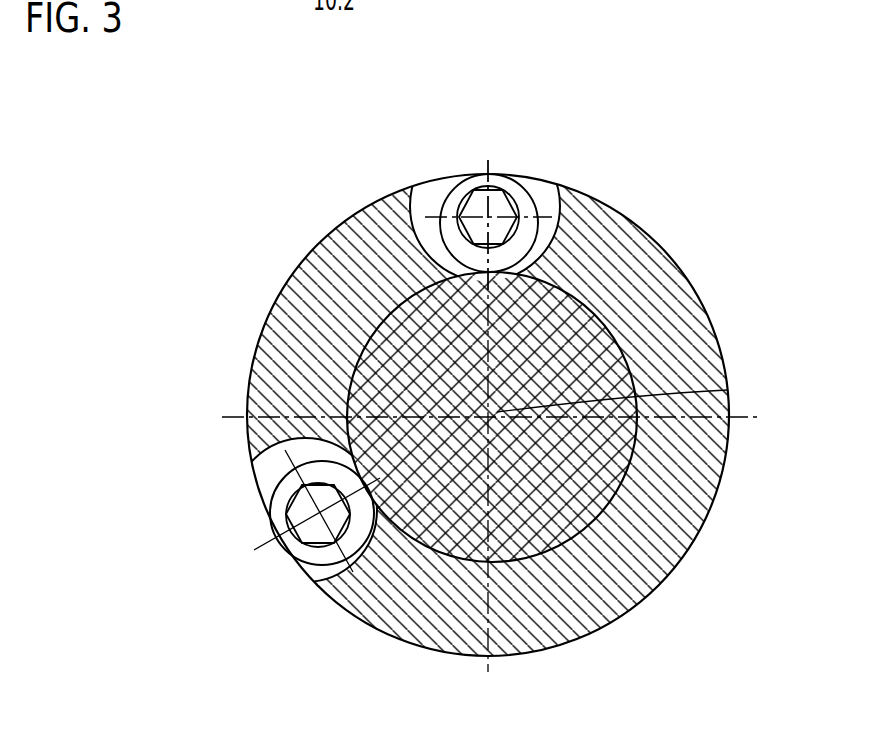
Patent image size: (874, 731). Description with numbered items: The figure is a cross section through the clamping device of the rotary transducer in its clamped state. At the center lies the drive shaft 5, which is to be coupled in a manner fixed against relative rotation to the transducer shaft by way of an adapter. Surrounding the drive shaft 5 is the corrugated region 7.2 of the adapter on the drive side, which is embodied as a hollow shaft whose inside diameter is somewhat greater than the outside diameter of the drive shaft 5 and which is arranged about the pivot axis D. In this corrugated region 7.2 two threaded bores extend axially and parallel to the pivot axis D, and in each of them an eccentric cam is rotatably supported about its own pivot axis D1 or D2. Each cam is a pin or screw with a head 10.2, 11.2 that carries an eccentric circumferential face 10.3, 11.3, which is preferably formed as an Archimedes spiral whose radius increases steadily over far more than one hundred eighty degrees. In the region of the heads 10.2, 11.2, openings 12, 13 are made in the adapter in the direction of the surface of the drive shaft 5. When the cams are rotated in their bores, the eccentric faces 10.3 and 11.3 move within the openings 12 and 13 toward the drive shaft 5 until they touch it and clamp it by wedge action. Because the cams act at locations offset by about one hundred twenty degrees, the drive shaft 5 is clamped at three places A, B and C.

The drive shaft 5 is at (580, 353).
The corrugated region of the adapter on the drive side 7.2 is at (647, 284).
The head 10.2 is at (345, 590).
The eccentric circumferential face 10.3 is at (257, 523).
The head 11.2 is at (507, 180).
The eccentric circumferential face 11.3 is at (472, 156).
The opening 12 is at (270, 480).
The opening 13 is at (533, 195).
The pivot axis D is at (727, 390).
The pivot axis of the first eccentric cam D1 is at (493, 211).
The pivot axis of the second eccentric cam D2 is at (300, 556).
The clamping place A is at (486, 286).
The clamping place B is at (382, 482).
The clamping place C is at (605, 535).